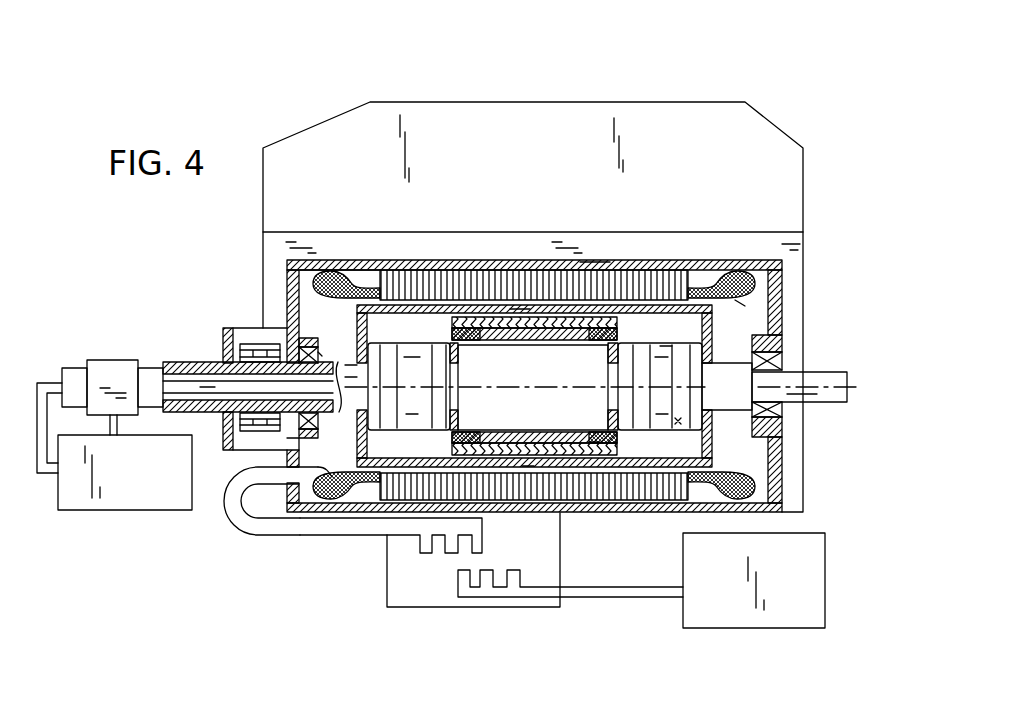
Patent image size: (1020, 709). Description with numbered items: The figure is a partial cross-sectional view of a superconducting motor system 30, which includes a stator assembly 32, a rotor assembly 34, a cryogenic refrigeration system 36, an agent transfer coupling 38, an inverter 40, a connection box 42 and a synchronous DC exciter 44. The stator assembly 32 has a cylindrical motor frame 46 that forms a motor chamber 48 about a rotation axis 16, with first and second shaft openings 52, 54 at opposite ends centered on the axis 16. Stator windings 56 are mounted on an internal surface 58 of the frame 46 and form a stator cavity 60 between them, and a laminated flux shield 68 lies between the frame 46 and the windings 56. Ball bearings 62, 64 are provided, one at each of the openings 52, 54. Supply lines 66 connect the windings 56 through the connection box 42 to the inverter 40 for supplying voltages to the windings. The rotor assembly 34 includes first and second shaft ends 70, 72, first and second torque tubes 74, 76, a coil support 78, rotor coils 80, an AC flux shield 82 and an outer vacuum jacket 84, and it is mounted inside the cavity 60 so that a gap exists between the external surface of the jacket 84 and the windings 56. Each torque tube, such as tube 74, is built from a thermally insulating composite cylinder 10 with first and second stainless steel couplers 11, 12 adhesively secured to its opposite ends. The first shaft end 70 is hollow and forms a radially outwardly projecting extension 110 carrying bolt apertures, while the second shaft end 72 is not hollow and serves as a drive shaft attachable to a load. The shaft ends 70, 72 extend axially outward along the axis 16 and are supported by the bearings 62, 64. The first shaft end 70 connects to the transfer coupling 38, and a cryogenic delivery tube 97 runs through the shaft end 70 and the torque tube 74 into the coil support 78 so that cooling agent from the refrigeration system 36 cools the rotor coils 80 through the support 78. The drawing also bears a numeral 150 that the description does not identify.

The superconducting motor system 30 is at (686, 62).
The stator assembly 32 is at (703, 275).
The cylindrical motor frame 46 is at (605, 262).
The motor chamber 48 is at (733, 303).
The thermally insulating composite cylinder 10 is at (665, 350).
The rotor assembly 34 is at (722, 333).
The stator cavity 60 is at (520, 306).
The laminated flux shield 68 is at (527, 275).
The coil support 78 is at (560, 445).
The stator windings 56 is at (345, 278).
The internal surface 58 is at (363, 274).
The first shaft end 70 is at (338, 412).
The outer vacuum jacket 84 is at (705, 472).
The second stainless steel coupler 12 is at (628, 352).
The rotation axis 16 is at (503, 388).
The first torque tube 74 is at (388, 360).
The second torque tube 76 is at (657, 350).
The radially outwardly projecting extension 110 is at (728, 402).
The first stainless steel coupler 11 is at (678, 421).
The second shaft opening 54 is at (765, 363).
The ball bearing 64 is at (778, 409).
The second shaft end 72 is at (847, 390).
The synchronous DC exciter 44 is at (248, 342).
The first shaft opening 52 is at (320, 352).
The hollow shaft 150 is at (185, 372).
The cryogenic delivery tube 97 is at (209, 390).
The agent transfer coupling 38 is at (109, 365).
The cryogenic refrigeration system 36 is at (118, 490).
The ball bearing 62 is at (287, 432).
The supply lines 66 is at (300, 527).
The connection box 42 is at (418, 588).
The AC flux shield 82 is at (528, 466).
The rotor coils 80 is at (594, 442).
The inverter 40 is at (782, 620).